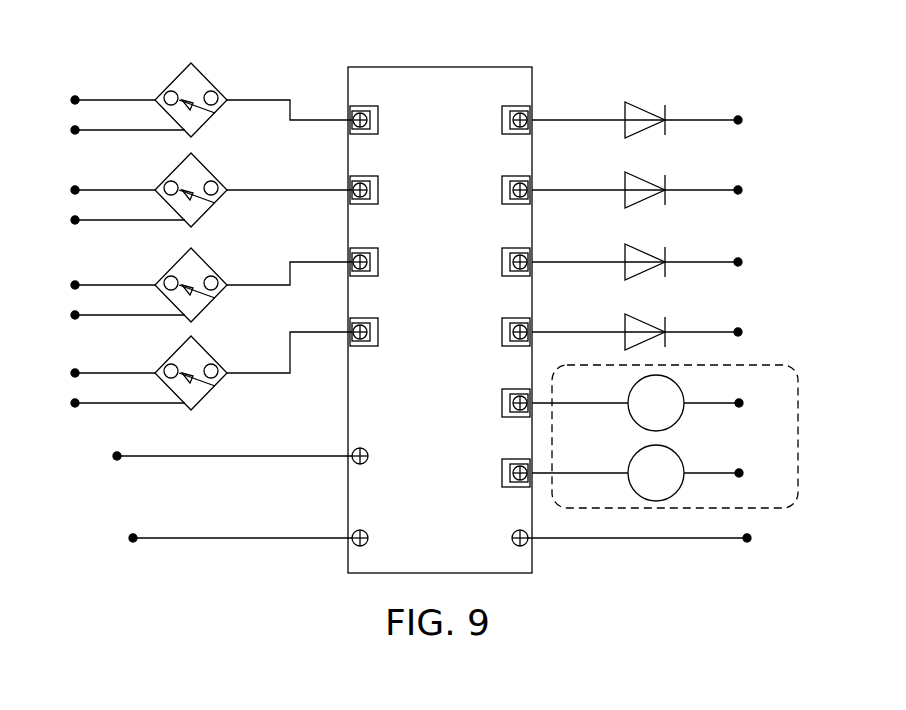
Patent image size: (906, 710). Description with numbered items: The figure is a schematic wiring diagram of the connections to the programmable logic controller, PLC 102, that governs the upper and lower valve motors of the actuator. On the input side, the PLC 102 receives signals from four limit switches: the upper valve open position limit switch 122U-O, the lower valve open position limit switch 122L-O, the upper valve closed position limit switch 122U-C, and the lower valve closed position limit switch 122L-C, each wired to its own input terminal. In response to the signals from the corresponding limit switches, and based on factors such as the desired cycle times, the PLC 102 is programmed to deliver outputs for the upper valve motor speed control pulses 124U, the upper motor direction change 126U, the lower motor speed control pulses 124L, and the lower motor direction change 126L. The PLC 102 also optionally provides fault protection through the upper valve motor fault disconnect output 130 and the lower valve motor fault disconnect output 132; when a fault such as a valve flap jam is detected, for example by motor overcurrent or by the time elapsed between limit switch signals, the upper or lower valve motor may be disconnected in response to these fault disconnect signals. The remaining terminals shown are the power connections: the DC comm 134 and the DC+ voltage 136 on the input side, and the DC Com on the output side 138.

The PLC 102 is at (437, 66).
The upper valve open position limit switch 122U-O is at (170, 88).
The lower valve open position limit switch 122L-O is at (177, 173).
The upper valve closed position limit switch 122U-C is at (177, 268).
The lower valve closed position limit switch 122L-C is at (177, 357).
The upper valve motor speed control pulses 124U is at (688, 120).
The upper motor direction change 126U is at (688, 190).
The lower motor speed control pulses 124L is at (688, 262).
The lower motor direction change 126L is at (688, 332).
The upper valve motor fault disconnect output 130 is at (723, 402).
The lower valve motor fault disconnect output 132 is at (707, 473).
The DC comm 134 is at (178, 458).
The DC+ voltage 136 is at (178, 540).
The DC Com on the output side 138 is at (685, 540).